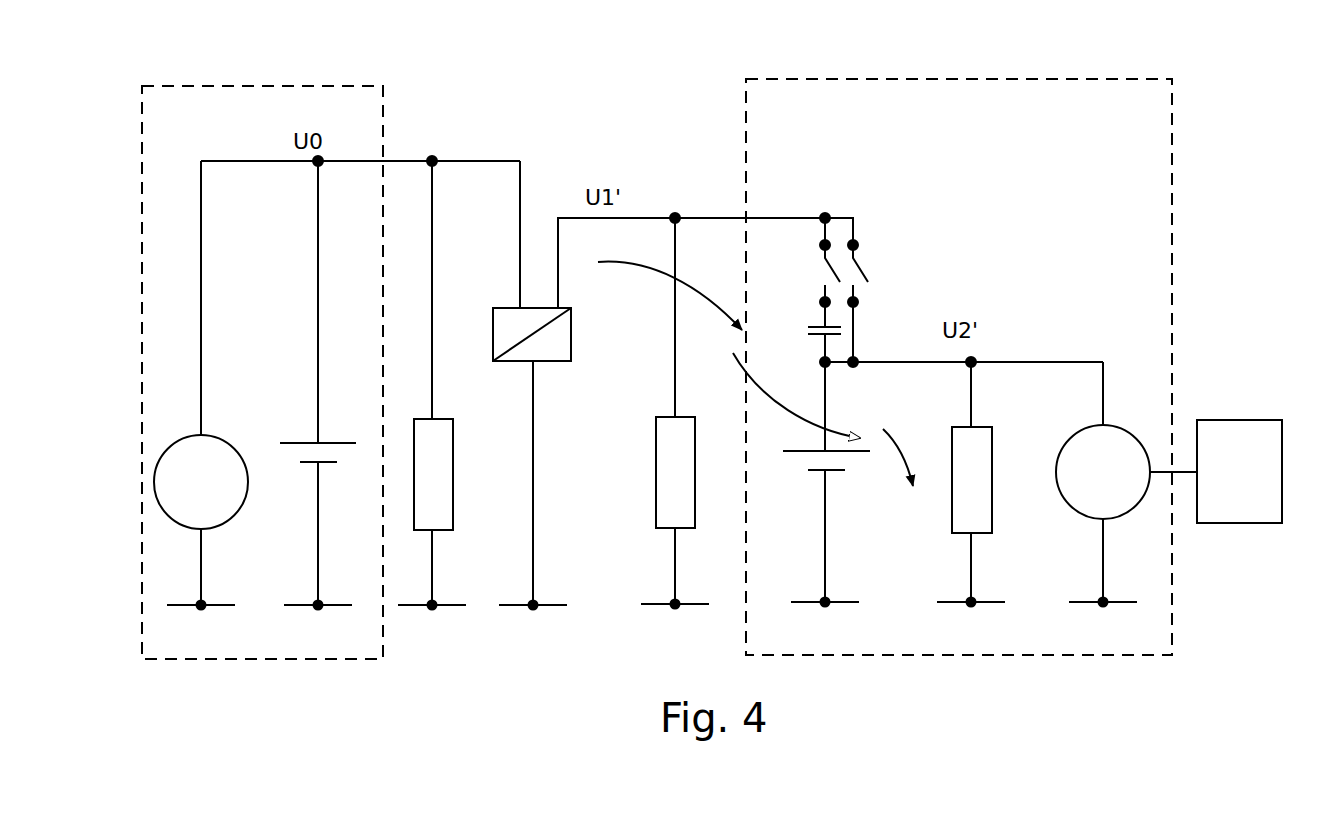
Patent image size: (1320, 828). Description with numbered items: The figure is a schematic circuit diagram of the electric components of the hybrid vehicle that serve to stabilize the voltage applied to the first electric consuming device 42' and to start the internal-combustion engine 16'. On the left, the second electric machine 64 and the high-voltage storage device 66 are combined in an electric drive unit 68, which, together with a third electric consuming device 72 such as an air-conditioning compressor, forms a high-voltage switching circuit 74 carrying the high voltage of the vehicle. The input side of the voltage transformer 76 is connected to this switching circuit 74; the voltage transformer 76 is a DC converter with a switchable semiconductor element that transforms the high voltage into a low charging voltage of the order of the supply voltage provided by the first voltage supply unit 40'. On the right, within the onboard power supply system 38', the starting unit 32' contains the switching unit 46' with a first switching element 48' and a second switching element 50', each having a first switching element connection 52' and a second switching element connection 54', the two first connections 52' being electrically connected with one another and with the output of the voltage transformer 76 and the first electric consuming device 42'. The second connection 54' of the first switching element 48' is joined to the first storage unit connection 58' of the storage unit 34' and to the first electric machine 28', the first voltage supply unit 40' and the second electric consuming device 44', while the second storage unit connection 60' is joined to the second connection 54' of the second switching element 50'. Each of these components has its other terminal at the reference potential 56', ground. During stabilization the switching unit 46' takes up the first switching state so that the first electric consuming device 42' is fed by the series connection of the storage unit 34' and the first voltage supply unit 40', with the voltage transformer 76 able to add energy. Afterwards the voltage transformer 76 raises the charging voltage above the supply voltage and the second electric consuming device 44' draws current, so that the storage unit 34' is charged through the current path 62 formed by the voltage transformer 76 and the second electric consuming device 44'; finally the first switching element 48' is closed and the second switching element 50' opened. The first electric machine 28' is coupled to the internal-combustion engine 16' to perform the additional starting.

The internal-combustion engine 16' is at (1239, 440).
The first electric machine 28' is at (1143, 482).
The starting unit 32' is at (997, 367).
The storage unit 34' is at (797, 332).
The onboard power supply system 38' is at (986, 287).
The first voltage supply unit 40' is at (843, 484).
The first electric consuming device 42' is at (639, 413).
The second electric consuming device 44' is at (1010, 484).
The switching unit 46' is at (871, 186).
The first switching element 48' is at (902, 252).
The second switching element 50' is at (800, 265).
The first switching element connection 52' is at (839, 225).
The second switching element connection 54' is at (847, 305).
The reference potential 56' is at (1120, 622).
The first storage unit connection 58' is at (856, 374).
The second storage unit connection 60' is at (886, 334).
The current path 62 is at (658, 265).
The second electric machine 64 is at (243, 500).
The high-voltage storage device 66 is at (333, 463).
The electric drive unit 68 is at (330, 86).
The third electric consuming device 72 is at (453, 502).
The switching circuit 74 is at (445, 126).
The voltage transformer 76 is at (558, 362).